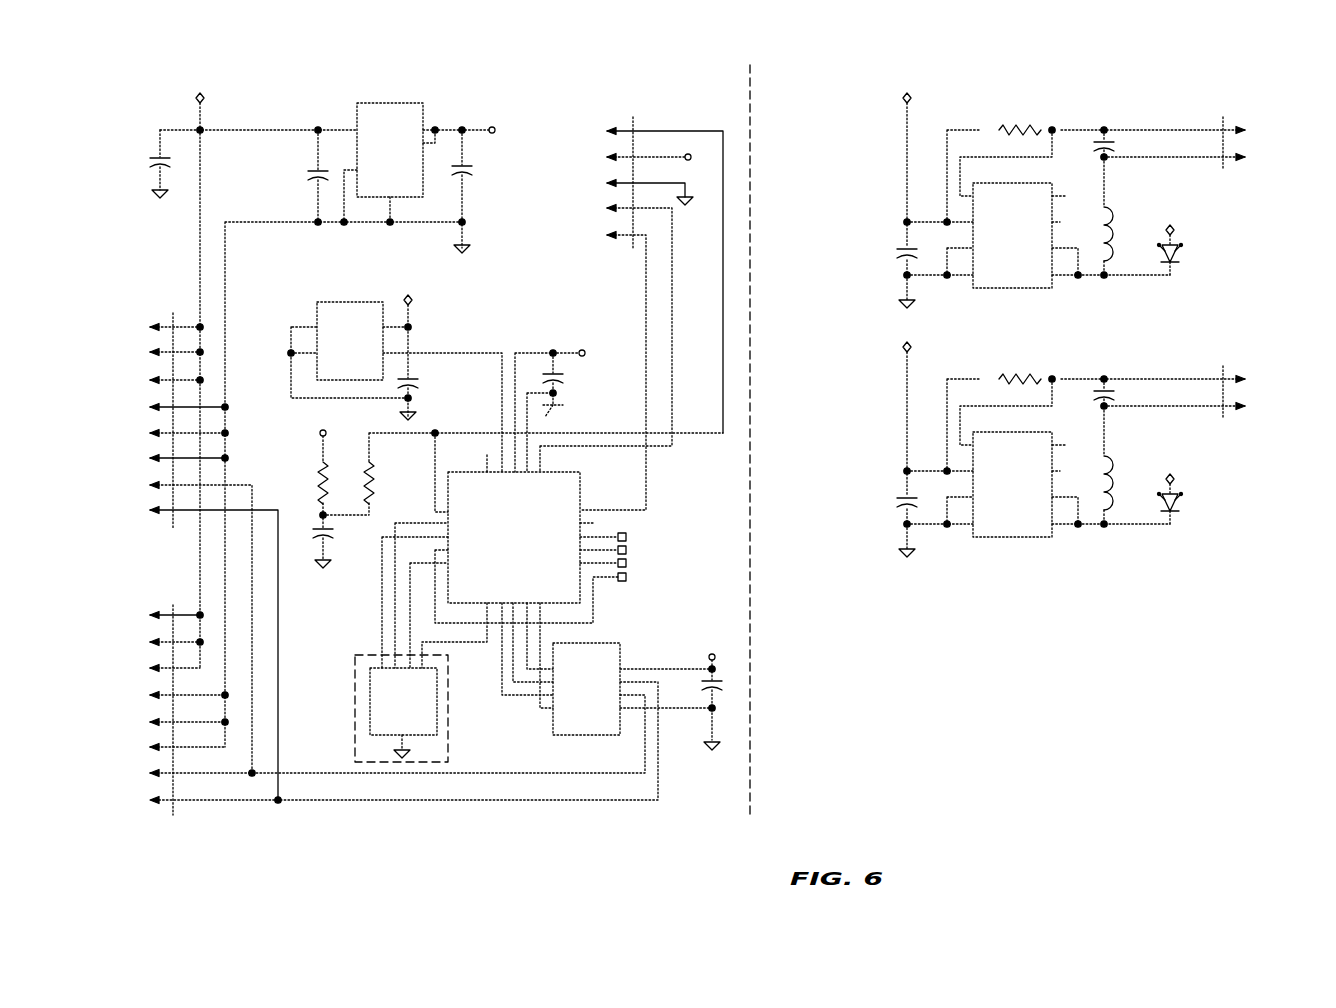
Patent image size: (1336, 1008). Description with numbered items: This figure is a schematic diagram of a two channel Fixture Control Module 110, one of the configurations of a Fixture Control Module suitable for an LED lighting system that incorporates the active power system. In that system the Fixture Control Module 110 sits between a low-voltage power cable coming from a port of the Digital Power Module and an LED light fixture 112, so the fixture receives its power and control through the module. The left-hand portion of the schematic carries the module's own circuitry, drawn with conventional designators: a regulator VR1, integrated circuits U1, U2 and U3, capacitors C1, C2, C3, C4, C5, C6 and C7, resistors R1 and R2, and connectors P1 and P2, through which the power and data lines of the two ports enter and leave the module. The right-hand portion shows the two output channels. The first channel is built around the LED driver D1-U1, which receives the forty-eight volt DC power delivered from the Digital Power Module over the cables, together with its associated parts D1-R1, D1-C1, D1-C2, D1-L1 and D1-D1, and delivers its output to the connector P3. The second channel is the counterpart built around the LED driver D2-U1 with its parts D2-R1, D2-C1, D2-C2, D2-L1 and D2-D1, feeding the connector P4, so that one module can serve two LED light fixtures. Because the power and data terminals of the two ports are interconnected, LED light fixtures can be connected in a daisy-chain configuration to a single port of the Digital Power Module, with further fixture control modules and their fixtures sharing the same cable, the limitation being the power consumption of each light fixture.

The Fixture Control Module 110 is at (528, 826).
The LED light fixture 112 is at (1107, 552).
The microcontroller U1 is at (514, 537).
The integrated circuit U2 is at (350, 341).
The transceiver U3 is at (586, 689).
The voltage regulator VR1 is at (390, 150).
The connector P1 is at (172, 410).
The connector P2 is at (172, 699).
The LED connector P3 is at (1222, 133).
The LED connector P4 is at (1222, 382).
The capacitor C1 is at (433, 379).
The capacitor C2 is at (578, 379).
The capacitor C3 is at (347, 539).
The capacitor C4 is at (692, 717).
The capacitor C5 is at (292, 176).
The capacitor C6 is at (486, 191).
The capacitor C7 is at (161, 141).
The resistor R1 is at (386, 484).
The resistor R2 is at (303, 484).
The LED driver D1-U1 is at (1012, 235).
The LED driver D2-U1 is at (1012, 484).
The resistor D1-R1 is at (1011, 115).
The resistor D2-R1 is at (1011, 364).
The capacitor D1-C1 is at (877, 248).
The capacitor D2-C1 is at (877, 497).
The capacitor D1-C2 is at (1124, 115).
The capacitor D2-C2 is at (1124, 364).
The inductor D1-L1 is at (1136, 213).
The inductor D2-L1 is at (1136, 462).
The LED D1-D1 is at (1199, 258).
The LED D2-D1 is at (1199, 507).